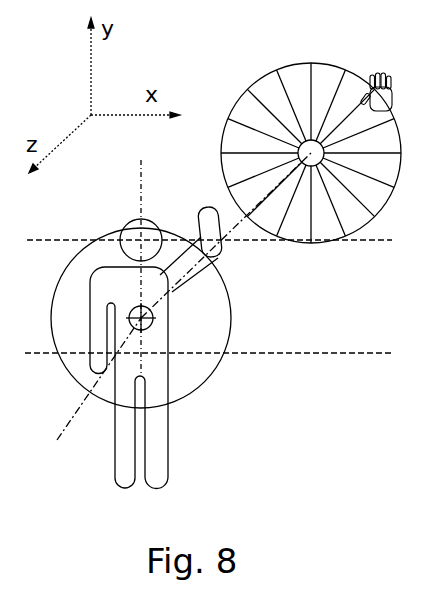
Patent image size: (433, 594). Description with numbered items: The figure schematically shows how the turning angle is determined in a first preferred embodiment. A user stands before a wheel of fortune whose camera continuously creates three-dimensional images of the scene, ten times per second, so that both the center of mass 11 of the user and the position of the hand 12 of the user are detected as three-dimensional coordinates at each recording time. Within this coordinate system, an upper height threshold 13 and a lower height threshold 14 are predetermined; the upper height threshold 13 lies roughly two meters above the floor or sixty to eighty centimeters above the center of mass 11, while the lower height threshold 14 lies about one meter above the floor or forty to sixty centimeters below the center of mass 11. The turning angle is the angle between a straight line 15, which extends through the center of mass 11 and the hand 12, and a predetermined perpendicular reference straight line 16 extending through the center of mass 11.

The center of mass 11 is at (154, 319).
The hand 12 is at (201, 208).
The upper height threshold 13 is at (360, 248).
The lower height threshold 14 is at (360, 358).
The straight line 15 is at (139, 201).
The perpendicular reference straight line 16 is at (68, 422).